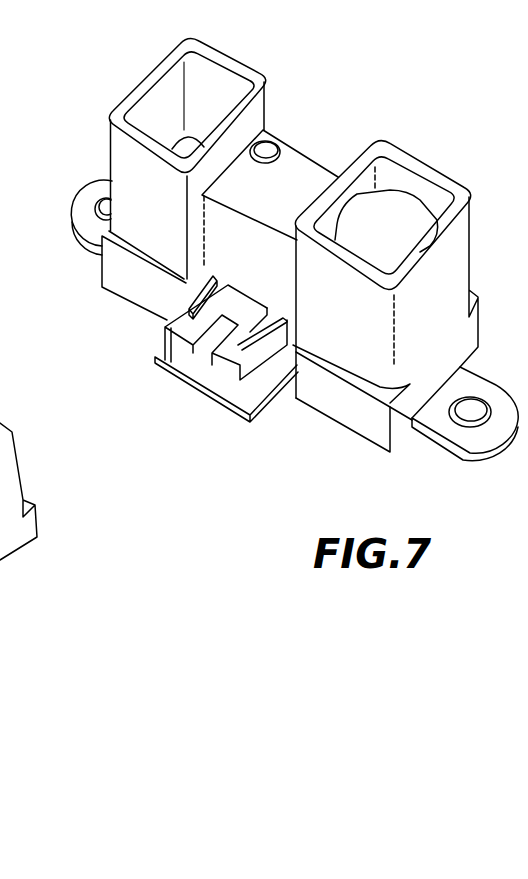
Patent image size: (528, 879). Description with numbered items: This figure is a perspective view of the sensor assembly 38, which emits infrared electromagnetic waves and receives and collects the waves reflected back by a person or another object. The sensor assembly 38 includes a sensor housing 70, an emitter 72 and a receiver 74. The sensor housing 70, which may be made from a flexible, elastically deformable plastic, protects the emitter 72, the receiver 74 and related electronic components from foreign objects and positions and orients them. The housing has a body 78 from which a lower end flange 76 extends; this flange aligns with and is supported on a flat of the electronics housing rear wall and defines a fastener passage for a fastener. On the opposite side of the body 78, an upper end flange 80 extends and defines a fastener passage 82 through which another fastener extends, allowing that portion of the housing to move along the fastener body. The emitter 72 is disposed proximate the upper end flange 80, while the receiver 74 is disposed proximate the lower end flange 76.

The sensor assembly 38 is at (180, 400).
The sensor housing 70 is at (293, 163).
The emitter 72 is at (219, 88).
The receiver 74 is at (397, 205).
The lower end flange 76 is at (452, 450).
The body 78 is at (333, 392).
The upper end flange 80 is at (62, 194).
The fastener passage 82 is at (95, 202).